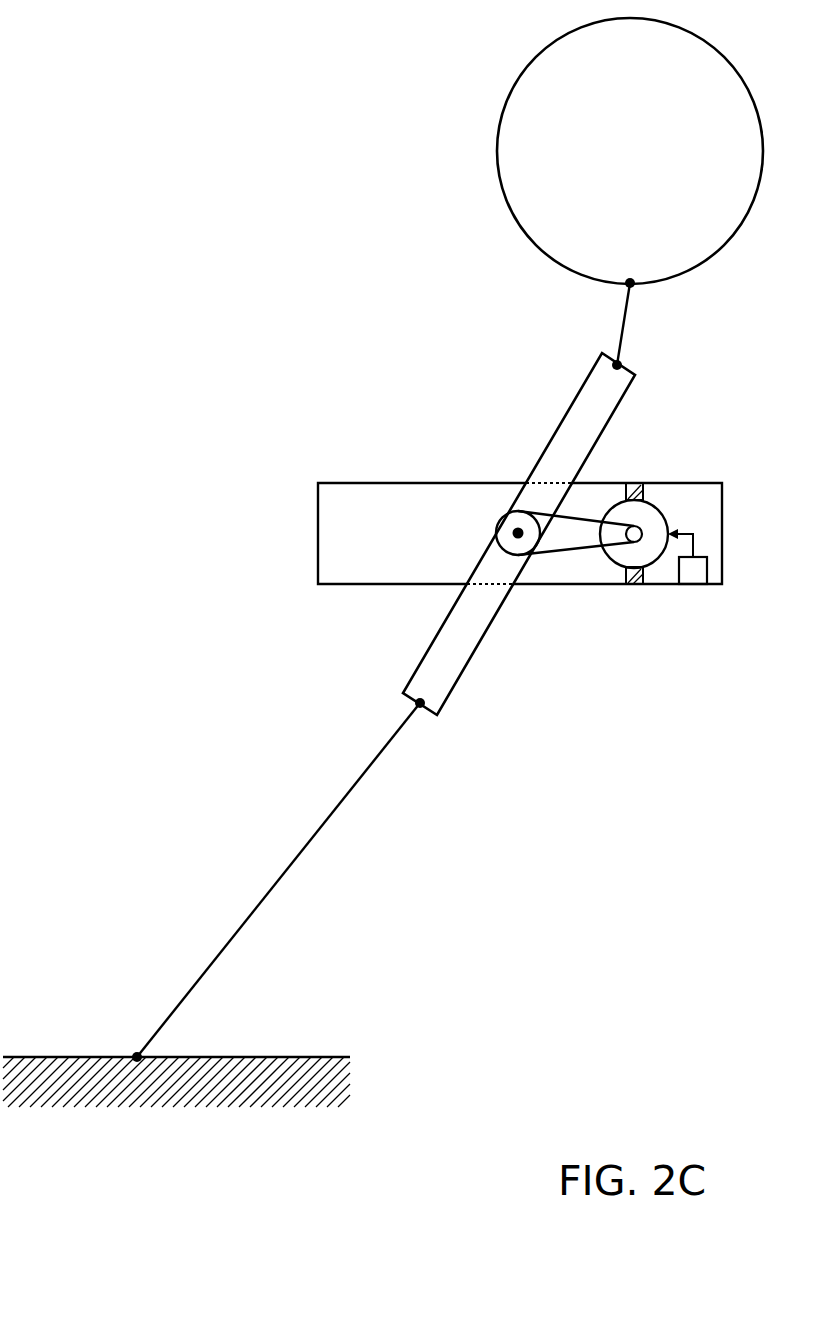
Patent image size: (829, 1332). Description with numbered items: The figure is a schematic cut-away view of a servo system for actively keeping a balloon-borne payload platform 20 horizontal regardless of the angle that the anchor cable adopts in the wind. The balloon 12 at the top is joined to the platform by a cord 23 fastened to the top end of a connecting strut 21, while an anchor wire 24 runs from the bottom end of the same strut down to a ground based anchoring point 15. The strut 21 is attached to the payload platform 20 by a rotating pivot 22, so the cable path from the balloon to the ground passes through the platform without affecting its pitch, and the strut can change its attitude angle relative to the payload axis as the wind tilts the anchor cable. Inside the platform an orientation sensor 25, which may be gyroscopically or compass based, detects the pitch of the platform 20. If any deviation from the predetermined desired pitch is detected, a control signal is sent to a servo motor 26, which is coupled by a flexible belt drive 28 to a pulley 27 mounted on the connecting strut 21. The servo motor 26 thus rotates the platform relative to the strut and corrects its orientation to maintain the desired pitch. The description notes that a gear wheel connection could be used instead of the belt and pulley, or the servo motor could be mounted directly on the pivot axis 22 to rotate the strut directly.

The balloon 12 is at (497, 155).
The ground based anchoring point 15 is at (137, 1057).
The payload platform 20 is at (318, 540).
The connecting strut 21 is at (572, 401).
The rotating pivot 22 is at (512, 539).
The cord 23 is at (623, 324).
The anchor wire 24 is at (354, 783).
The orientation sensor 25 is at (693, 577).
The servo motor 26 is at (665, 501).
The pulley 27 is at (497, 526).
The flexible belt drive 28 is at (564, 552).